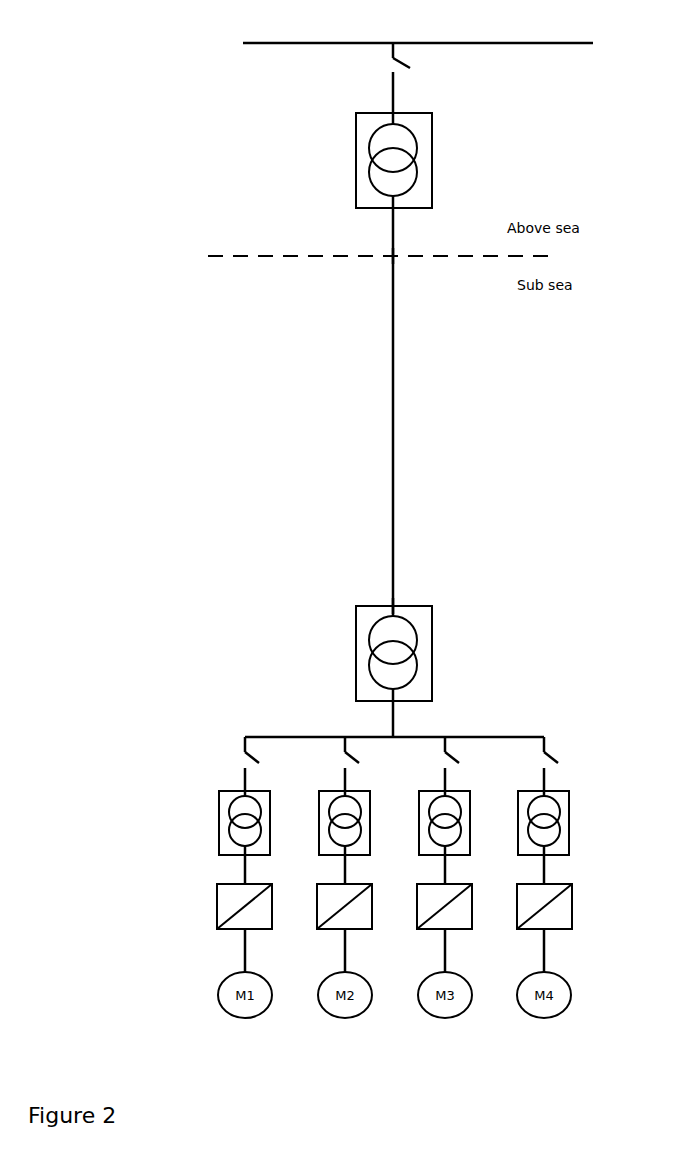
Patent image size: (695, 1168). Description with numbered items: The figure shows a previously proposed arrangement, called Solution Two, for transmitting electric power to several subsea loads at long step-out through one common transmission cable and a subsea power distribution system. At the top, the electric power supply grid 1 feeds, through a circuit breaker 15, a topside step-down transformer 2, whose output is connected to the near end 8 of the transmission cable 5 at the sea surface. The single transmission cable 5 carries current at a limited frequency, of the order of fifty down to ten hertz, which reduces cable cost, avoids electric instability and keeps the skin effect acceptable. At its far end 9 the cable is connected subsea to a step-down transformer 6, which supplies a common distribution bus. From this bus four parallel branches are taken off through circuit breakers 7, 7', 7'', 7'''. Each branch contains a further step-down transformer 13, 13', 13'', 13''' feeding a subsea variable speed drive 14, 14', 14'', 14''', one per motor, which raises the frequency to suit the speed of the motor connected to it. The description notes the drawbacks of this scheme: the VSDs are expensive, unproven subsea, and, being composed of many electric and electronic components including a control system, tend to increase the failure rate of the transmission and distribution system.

The electric power supply grid 1 is at (287, 35).
The circuit breaker 15 is at (410, 62).
The step-down transformer 2 is at (352, 147).
The near end of transmission cable 8 is at (390, 255).
The transmission cable 5 is at (383, 438).
The far end of transmission cable 9 is at (390, 603).
The step-down transformer 6 is at (343, 637).
The circuit breaker 7 is at (268, 764).
The circuit breaker 7' is at (365, 764).
The circuit breaker 7'' is at (465, 764).
The circuit breaker 7''' is at (562, 764).
The step-down transformer 13 is at (222, 837).
The step-down transformer 13' is at (328, 837).
The step-down transformer 13'' is at (426, 837).
The step-down transformer 13''' is at (526, 837).
The VSD 14 is at (226, 928).
The VSD 14' is at (328, 928).
The VSD 14'' is at (426, 928).
The VSD 14''' is at (525, 928).